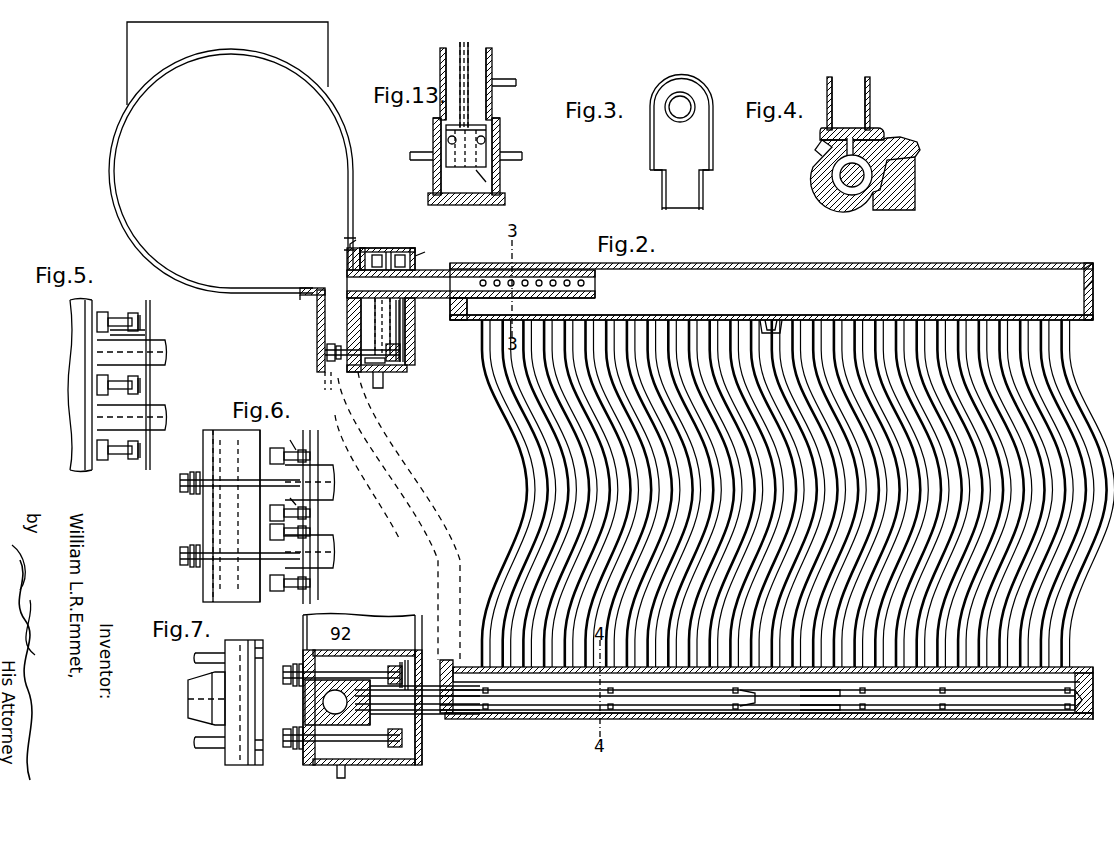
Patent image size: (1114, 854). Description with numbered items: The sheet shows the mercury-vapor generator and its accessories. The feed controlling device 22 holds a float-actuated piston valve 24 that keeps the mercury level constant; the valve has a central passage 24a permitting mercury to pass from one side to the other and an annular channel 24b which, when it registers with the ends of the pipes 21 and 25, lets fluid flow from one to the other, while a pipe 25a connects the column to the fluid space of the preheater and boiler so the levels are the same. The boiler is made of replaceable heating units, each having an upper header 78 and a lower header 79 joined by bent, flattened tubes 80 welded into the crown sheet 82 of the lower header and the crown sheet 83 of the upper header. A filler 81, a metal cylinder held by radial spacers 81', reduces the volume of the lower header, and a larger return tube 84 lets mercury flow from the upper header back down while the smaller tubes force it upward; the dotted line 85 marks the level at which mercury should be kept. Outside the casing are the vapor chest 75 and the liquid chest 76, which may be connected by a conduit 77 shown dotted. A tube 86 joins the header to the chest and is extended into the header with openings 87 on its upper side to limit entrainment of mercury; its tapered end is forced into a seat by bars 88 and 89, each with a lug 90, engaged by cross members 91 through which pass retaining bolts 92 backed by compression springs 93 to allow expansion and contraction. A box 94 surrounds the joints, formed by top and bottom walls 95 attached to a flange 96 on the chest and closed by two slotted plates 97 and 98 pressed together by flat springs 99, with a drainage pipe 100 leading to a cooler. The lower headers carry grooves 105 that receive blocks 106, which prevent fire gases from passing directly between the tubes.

In FIG. 13, the pipe 21 is at (420, 162).
In FIG. 13, the feed controlling device 22 is at (440, 56).
In FIG. 13, the piston valve 24 is at (500, 133).
In FIG. 13, the central passage 24a is at (505, 185).
In FIG. 13, the annular channel 24b is at (446, 140).
In FIG. 13, the pipe 25 is at (512, 160).
In FIG. 13, the pipe 25a is at (503, 86).
In FIG. 2, the upper chest 75 is at (318, 318).
In FIG. 7, the lower chest 76 is at (305, 705).
In FIG. 2, the conduit 77 is at (385, 478).
In FIG. 6, the conduit 77 is at (395, 482).
In FIG. 2, the upper header 78 is at (736, 270).
In FIG. 2, the lower header 79 is at (720, 715).
In FIG. 4, the lower header 79 is at (820, 180).
In FIG. 2, the tubes 80 is at (548, 520).
In FIG. 4, the tubes 80 is at (870, 88).
In FIG. 2, the filler 81 is at (757, 718).
In FIG. 4, the filler 81 is at (834, 184).
In FIG. 2, the radial spacers 81' is at (776, 717).
In FIG. 4, the radial spacers 81' is at (853, 199).
In FIG. 2, the crown sheet 82 is at (1075, 667).
In FIG. 4, the crown sheet 82 is at (878, 135).
In FIG. 2, the crown sheet 83 is at (1078, 320).
In FIG. 3, the crown sheet 83 is at (708, 172).
In FIG. 2, the return tube 84 is at (776, 345).
In FIG. 2, the dotted line 85 is at (985, 304).
In FIG. 2, the tube 86 is at (453, 280).
In FIG. 5, the tube 86 is at (160, 368).
In FIG. 6, the tube 86 is at (310, 516).
In FIG. 2, the openings 87 is at (580, 270).
In FIG. 3, the openings 87 is at (692, 96).
In FIG. 6, the openings 87 is at (280, 458).
In FIG. 7, the openings 87 is at (212, 700).
In FIG. 2, the bar 88 is at (388, 328).
In FIG. 5, the bar 88 is at (115, 318).
In FIG. 6, the bar 88 is at (252, 448).
In FIG. 7, the bar 88 is at (388, 740).
In FIG. 6, the bar 89 is at (306, 512).
In FIG. 7, the lug 90 is at (263, 700).
In FIG. 6, the cross members 91 is at (306, 530).
In FIG. 7, the cross members 91 is at (258, 752).
In FIG. 6, the retaining bolts 92 is at (235, 490).
In FIG. 7, the retaining bolts 92 is at (196, 660).
In FIG. 6, the compression springs 93 is at (190, 495).
In FIG. 7, the compression springs 93 is at (300, 665).
In FIG. 2, the box 94 is at (415, 258).
In FIG. 2, the top and bottom walls 95 is at (383, 248).
In FIG. 7, the top and bottom walls 95 is at (378, 650).
In FIG. 2, the flange 96 is at (347, 257).
In FIG. 7, the flange 96 is at (305, 758).
In FIG. 2, the plate 97 is at (417, 352).
In FIG. 5, the plate 97 is at (148, 332).
In FIG. 6, the plate 97 is at (320, 596).
In FIG. 7, the plate 97 is at (422, 740).
In FIG. 2, the plate 98 is at (415, 262).
In FIG. 5, the plate 98 is at (142, 320).
In FIG. 6, the plate 98 is at (320, 578).
In FIG. 7, the plate 98 is at (410, 672).
In FIG. 2, the flat springs 99 is at (400, 342).
In FIG. 5, the flat springs 99 is at (150, 448).
In FIG. 6, the flat springs 99 is at (305, 595).
In FIG. 7, the flat springs 99 is at (405, 680).
In FIG. 2, the drainage pipe 100 is at (383, 380).
In FIG. 7, the drainage pipe 100 is at (345, 773).
In FIG. 4, the grooves 105 is at (822, 152).
In FIG. 4, the blocks 106 is at (916, 172).